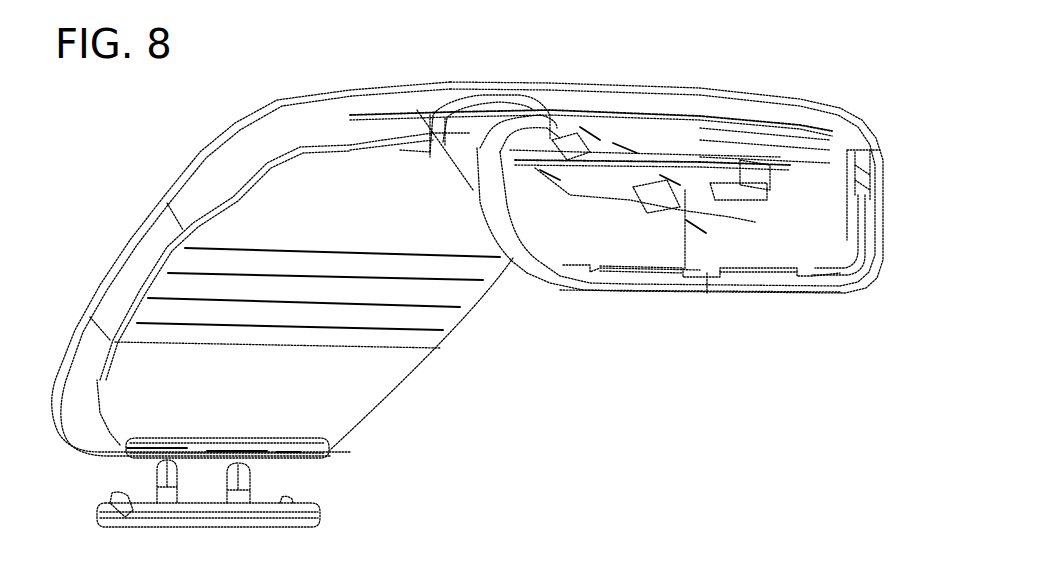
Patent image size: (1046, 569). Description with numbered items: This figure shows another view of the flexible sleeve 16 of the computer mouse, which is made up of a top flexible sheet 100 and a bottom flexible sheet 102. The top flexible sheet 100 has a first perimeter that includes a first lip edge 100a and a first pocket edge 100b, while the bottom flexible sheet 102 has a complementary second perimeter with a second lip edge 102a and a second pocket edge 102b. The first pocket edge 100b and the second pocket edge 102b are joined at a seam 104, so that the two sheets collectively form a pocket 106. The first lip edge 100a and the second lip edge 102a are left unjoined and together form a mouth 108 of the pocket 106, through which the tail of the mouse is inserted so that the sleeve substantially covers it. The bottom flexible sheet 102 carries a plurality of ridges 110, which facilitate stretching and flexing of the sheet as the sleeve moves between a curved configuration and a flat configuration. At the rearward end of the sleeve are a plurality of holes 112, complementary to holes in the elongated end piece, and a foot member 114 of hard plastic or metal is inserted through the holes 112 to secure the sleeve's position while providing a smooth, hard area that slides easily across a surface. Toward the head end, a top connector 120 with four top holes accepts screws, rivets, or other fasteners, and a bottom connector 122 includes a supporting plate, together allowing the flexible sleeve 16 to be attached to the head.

The flexible sleeve 16 is at (354, 88).
The top flexible sheet 100 is at (432, 100).
The first lip edge 100a is at (870, 109).
The first pocket edge 100b is at (370, 113).
The bottom flexible sheet 102 is at (395, 378).
The second lip edge 102a is at (637, 278).
The second pocket edge 102b is at (357, 115).
The seam 104 is at (293, 120).
The pocket 106 is at (192, 133).
The mouth 108 is at (722, 233).
The ridges 110 is at (263, 253).
The holes 112 is at (178, 434).
The foot member 114 is at (320, 512).
The top connector 120 is at (746, 151).
The bottom connector 122 is at (652, 204).